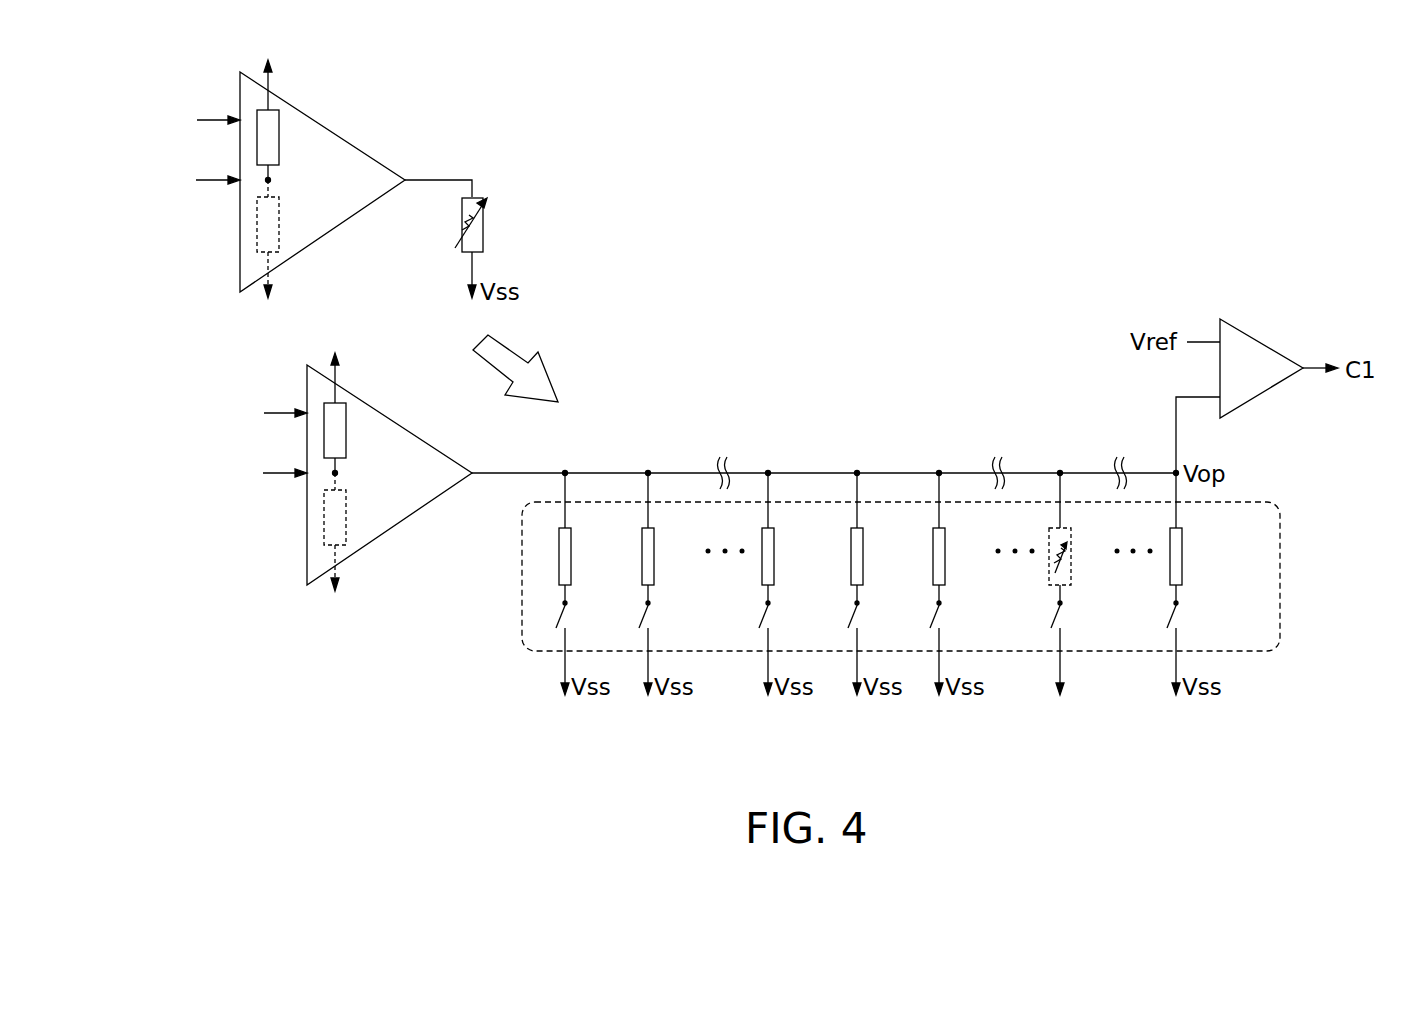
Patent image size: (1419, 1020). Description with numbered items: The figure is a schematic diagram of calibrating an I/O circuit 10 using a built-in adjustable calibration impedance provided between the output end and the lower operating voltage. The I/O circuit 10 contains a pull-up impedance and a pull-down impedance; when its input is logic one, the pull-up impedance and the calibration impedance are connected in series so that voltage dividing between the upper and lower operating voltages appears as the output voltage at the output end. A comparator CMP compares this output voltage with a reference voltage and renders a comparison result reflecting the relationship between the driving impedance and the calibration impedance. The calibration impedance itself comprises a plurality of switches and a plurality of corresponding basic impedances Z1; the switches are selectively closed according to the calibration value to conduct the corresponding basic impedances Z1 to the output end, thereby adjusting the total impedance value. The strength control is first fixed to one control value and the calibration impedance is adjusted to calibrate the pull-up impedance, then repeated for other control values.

The I/O circuit 10 is at (308, 329).
The basic impedance Z1 is at (903, 586).
The comparator CMP is at (1261, 368).